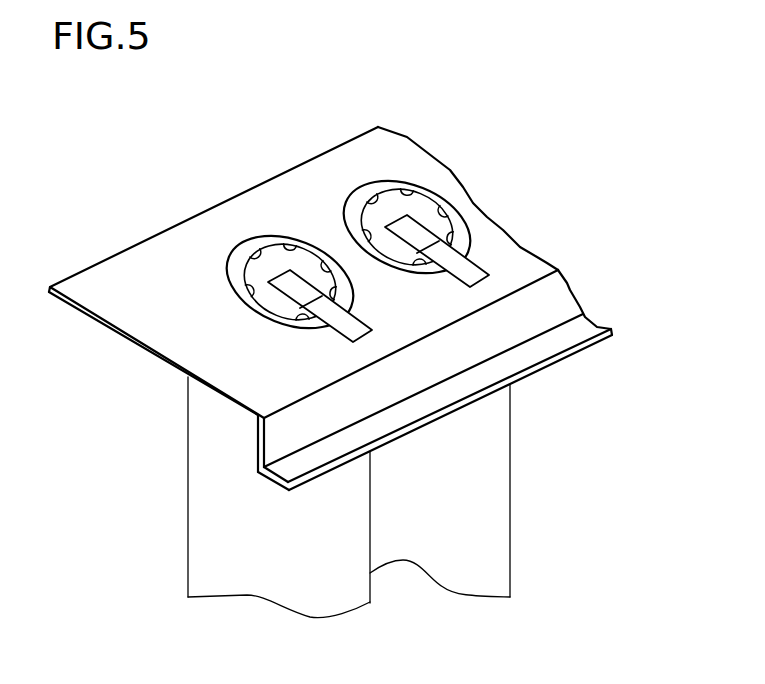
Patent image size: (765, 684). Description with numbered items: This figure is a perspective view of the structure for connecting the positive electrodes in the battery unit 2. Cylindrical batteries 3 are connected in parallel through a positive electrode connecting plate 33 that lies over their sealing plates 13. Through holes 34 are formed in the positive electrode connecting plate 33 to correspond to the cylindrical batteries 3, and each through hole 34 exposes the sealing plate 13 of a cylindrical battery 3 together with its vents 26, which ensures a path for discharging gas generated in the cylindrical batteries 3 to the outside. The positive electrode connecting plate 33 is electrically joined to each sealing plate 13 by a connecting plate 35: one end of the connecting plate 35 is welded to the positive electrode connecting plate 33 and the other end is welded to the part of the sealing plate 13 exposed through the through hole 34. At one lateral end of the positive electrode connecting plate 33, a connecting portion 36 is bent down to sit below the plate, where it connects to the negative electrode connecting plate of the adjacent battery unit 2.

The battery unit 2 is at (162, 462).
The cylindrical battery 3 is at (225, 578).
The sealing plate 13 is at (228, 249).
The vent 26 is at (252, 255).
The positive electrode connecting plate 33 is at (278, 195).
The through hole 34 is at (243, 282).
The connecting plate 35 is at (474, 263).
The connecting portion 36 is at (581, 330).